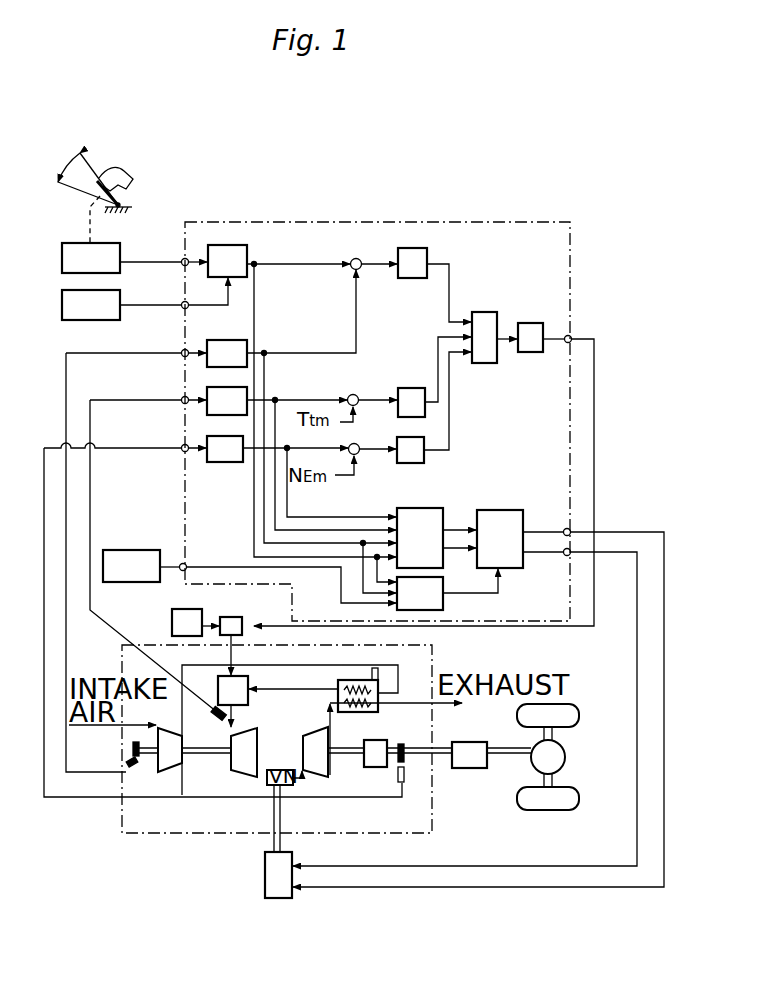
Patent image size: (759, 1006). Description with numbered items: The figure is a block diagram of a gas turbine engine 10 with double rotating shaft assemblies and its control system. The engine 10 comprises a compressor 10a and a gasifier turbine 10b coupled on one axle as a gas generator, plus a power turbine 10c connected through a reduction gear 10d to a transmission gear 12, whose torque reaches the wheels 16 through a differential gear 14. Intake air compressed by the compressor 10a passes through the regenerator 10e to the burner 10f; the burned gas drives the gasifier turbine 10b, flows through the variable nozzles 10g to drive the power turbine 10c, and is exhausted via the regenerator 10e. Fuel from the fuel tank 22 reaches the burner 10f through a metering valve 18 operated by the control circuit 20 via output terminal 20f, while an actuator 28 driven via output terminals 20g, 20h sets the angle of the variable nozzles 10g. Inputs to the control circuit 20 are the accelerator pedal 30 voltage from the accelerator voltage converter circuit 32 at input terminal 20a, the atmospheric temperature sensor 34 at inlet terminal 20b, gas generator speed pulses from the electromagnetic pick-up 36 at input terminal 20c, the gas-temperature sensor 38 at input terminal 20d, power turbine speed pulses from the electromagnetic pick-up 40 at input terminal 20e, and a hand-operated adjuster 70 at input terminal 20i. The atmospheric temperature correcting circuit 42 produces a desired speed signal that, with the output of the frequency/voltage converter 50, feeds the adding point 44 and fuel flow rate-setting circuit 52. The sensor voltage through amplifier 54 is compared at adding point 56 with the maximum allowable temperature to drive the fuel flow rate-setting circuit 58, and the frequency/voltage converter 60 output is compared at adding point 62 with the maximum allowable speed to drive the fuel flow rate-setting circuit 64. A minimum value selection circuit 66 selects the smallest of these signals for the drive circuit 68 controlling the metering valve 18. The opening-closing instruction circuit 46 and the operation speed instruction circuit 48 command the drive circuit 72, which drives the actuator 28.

The gas turbine engine 10 is at (161, 648).
The compressor 10a is at (180, 771).
The gasifier turbine 10b is at (244, 776).
The power turbine 10c is at (330, 778).
The reduction gear 10d is at (392, 731).
The regenerator 10e is at (338, 682).
The burner 10f is at (248, 703).
The variable nozzles 10g is at (272, 792).
The transmission gear 12 is at (471, 770).
The differential gear 14 is at (566, 754).
The wheels 16 is at (574, 704).
The metering valve 18 is at (240, 620).
The control circuit 20 is at (527, 222).
The input terminal 20a is at (182, 256).
The inlet terminal 20b is at (183, 300).
The input terminal 20c is at (183, 348).
The input terminal 20d is at (180, 396).
The input terminal 20e is at (180, 444).
The output terminal 20f is at (572, 337).
The output terminal 20g is at (565, 528).
The output terminal 20h is at (566, 556).
The input terminal 20i is at (187, 564).
The fuel tank 22 is at (173, 614).
The actuator 28 is at (264, 897).
The accelerator pedal 30 is at (114, 175).
The accelerator voltage converter circuit 32 is at (70, 243).
The atmospheric temperature sensor 34 is at (64, 292).
The electromagnetic pick-up 36 is at (124, 762).
The gas-temperature sensor 38 is at (215, 718).
The electromagnetic pick-up 40 is at (394, 783).
The atmospheric temperature correcting circuit 42 is at (242, 246).
The adding point 44 is at (351, 271).
The opening-closing instruction circuit 46 is at (427, 508).
The operation speed instruction circuit 48 is at (443, 607).
The frequency/voltage converter 50 is at (225, 341).
The fuel flow rate-setting circuit 52 is at (427, 247).
The amplifier 54 is at (247, 387).
The adding point 56 is at (355, 394).
The fuel flow rate-setting circuit 58 is at (412, 388).
The frequency/voltage converter 60 is at (224, 462).
The adding point 62 is at (360, 454).
The fuel flow rate-setting circuit 64 is at (424, 462).
The minimum value selection circuit 66 is at (487, 312).
The drive circuit 68 is at (530, 322).
The hand-operated adjuster 70 is at (141, 550).
The drive circuit 72 is at (500, 496).